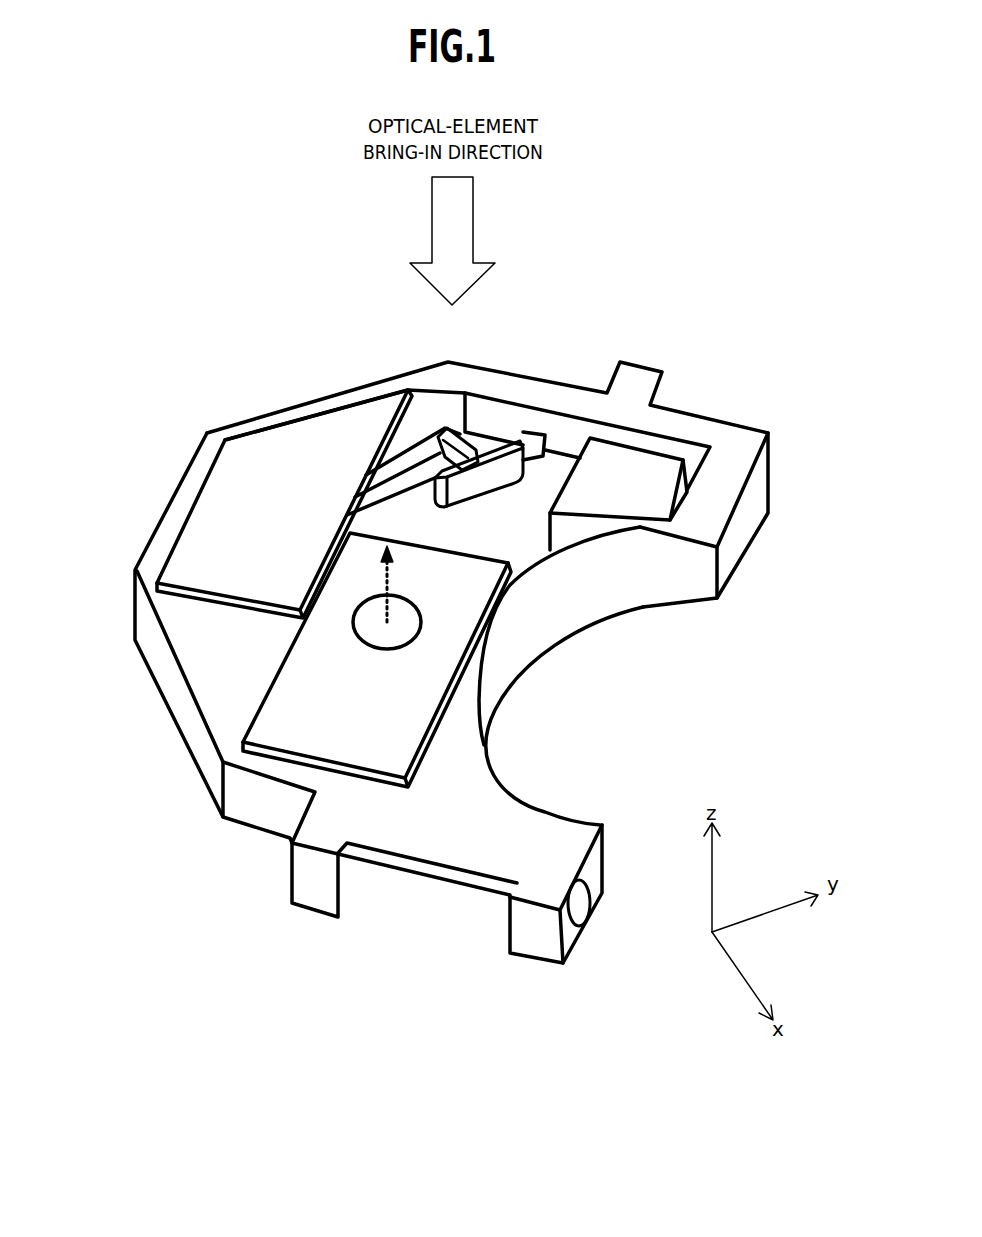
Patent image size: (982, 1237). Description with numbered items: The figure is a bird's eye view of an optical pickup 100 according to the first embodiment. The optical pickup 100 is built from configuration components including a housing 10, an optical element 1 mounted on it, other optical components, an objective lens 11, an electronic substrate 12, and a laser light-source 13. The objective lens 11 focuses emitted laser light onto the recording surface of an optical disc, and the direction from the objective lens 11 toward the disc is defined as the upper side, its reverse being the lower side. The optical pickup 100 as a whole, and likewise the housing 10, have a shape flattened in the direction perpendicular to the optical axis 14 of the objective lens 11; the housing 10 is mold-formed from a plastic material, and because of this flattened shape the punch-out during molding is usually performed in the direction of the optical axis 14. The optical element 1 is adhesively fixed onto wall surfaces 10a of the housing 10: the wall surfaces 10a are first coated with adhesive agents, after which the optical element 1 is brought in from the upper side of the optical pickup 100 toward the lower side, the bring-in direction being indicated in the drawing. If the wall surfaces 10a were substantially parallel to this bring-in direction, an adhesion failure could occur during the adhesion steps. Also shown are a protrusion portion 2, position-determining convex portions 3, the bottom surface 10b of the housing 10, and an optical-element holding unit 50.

The optical pickup 100 is at (135, 306).
The housing 10 is at (167, 617).
The wall surfaces 10a is at (415, 487).
The bottom surface 10b is at (580, 578).
The optical element 1 is at (485, 480).
The protrusion portion 2 is at (457, 447).
The position-determining convex portions 3 is at (683, 535).
The objective lens 11 is at (380, 640).
The electronic substrate 12 is at (263, 490).
The laser light-source 13 is at (625, 470).
The optical axis 14 is at (383, 577).
The optical-element holding unit 50 is at (430, 422).